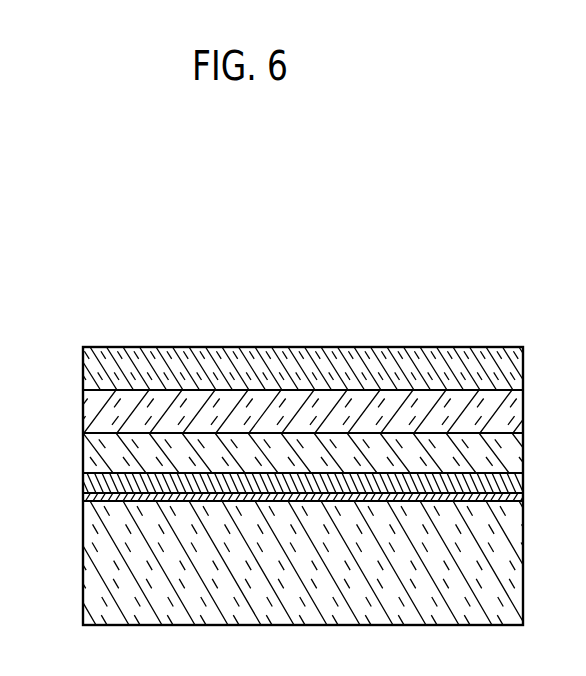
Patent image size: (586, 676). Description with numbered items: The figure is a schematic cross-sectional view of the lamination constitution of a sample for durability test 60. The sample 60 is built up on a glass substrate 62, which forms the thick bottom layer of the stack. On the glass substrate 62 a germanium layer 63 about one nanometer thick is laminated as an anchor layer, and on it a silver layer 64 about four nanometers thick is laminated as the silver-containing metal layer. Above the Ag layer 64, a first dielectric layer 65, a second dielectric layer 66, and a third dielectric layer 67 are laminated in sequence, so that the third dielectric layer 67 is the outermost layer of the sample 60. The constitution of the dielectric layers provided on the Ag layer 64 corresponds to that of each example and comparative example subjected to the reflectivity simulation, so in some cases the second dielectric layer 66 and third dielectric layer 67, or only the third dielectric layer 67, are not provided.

The sample for durability test 60 is at (471, 293).
The glass substrate 62 is at (83, 581).
The Ge layer 63 is at (83, 500).
The Ag layer 64 is at (83, 484).
The first dielectric layer 65 is at (83, 456).
The second dielectric layer 66 is at (83, 413).
The third dielectric layer 67 is at (83, 370).